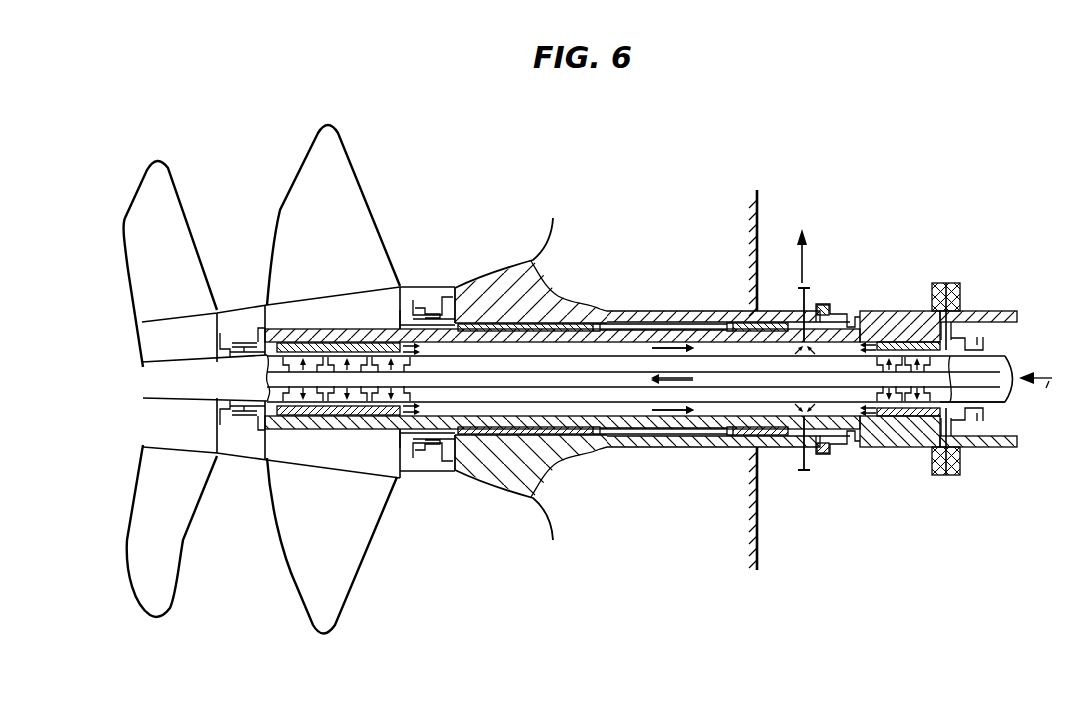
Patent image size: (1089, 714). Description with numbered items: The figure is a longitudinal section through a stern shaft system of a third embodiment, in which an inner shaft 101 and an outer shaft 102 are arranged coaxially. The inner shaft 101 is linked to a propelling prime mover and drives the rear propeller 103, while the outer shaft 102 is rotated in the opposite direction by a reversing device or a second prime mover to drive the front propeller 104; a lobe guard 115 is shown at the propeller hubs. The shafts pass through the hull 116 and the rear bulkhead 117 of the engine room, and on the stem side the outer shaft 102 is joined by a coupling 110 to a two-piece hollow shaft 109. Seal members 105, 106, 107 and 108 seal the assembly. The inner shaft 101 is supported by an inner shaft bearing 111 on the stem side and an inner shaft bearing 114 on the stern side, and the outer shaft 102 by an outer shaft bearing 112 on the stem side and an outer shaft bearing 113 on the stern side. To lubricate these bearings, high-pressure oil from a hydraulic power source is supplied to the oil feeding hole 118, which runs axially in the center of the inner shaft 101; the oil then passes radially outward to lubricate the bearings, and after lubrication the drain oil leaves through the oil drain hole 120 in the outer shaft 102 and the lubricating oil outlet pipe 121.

The inner shaft 101 is at (1013, 362).
The outer shaft 102 is at (693, 337).
The rear propeller 103 is at (184, 201).
The front propeller 104 is at (352, 169).
The seal member 105 is at (242, 340).
The seal member 106 is at (413, 299).
The seal member 107 is at (838, 318).
The seal member 108 is at (952, 332).
The two-piece hollow shaft 109 is at (993, 311).
The coupling of the outer shaft 110 is at (900, 310).
The inner shaft bearing on the stem side 111 is at (960, 360).
The outer shaft bearing on the stem side 112 is at (725, 333).
The outer shaft bearing on the stern side 113 is at (602, 332).
The inner shaft bearing on the stern side 114 is at (265, 378).
The lobe guard 115 is at (257, 330).
The hull 116 is at (517, 272).
The rear bulkhead of an engine room 117 is at (752, 215).
The oil feeding hole 118 is at (957, 372).
The oil drain hole 120 is at (803, 325).
The lubricating oil outlet pipe 121 is at (799, 283).